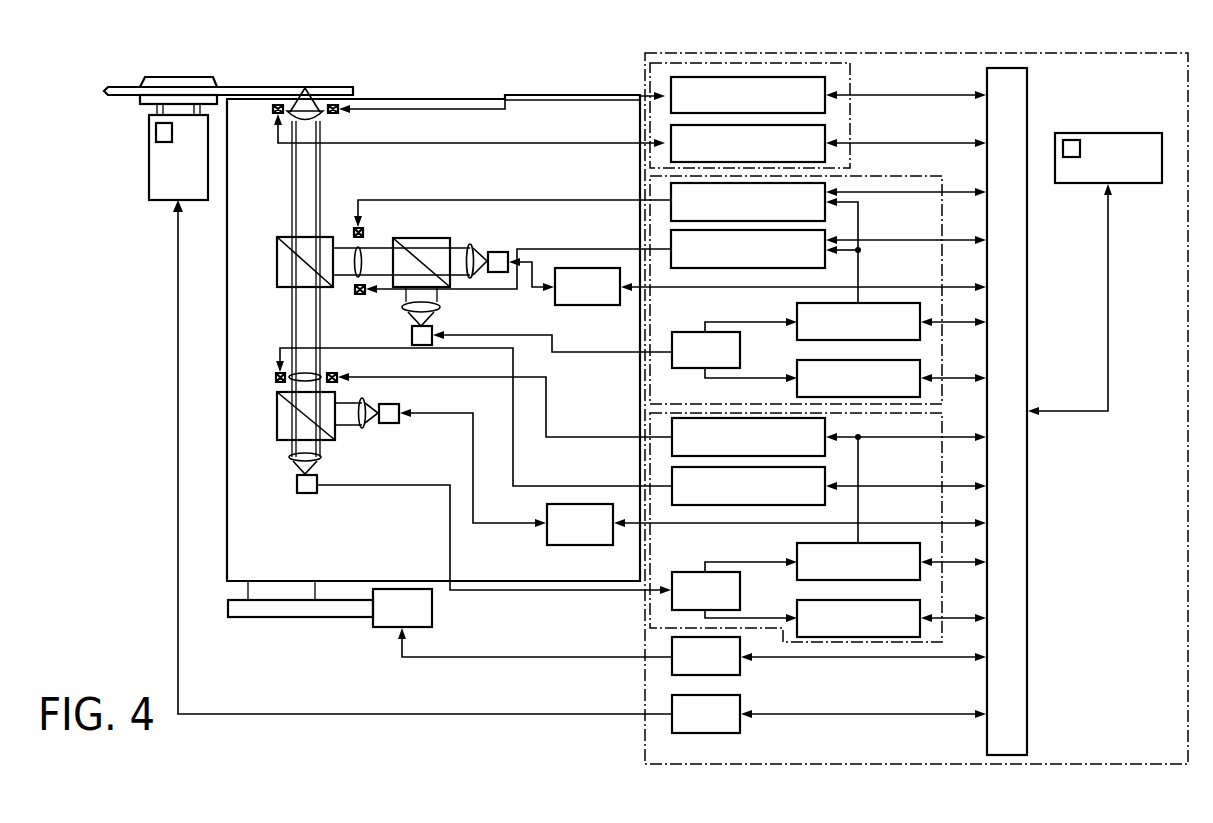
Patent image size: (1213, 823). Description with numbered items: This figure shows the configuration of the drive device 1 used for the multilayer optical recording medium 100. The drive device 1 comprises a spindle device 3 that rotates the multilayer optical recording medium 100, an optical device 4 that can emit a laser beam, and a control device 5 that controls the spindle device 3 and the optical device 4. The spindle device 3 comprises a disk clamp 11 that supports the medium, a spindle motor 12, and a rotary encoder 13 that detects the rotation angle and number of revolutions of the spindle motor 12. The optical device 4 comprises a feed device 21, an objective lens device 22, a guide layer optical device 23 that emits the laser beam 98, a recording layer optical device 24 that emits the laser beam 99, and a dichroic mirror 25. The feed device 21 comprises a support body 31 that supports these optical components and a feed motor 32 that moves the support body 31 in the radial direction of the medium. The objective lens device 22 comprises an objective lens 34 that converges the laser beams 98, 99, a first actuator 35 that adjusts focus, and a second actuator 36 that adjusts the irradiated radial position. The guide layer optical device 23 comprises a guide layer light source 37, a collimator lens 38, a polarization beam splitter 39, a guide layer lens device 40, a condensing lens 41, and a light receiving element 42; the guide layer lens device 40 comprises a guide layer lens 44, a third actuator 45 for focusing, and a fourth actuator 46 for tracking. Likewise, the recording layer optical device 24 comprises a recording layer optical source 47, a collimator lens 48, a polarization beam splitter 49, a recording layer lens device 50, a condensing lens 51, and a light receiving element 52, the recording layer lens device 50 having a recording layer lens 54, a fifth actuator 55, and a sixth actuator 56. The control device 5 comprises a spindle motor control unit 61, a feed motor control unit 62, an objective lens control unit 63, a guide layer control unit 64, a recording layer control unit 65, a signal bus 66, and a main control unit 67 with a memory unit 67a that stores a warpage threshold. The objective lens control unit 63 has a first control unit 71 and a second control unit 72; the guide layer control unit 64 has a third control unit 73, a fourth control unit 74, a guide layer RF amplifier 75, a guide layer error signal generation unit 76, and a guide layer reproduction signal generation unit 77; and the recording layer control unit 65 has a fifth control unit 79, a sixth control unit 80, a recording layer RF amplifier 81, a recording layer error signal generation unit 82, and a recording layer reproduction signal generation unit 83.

The drive device 1 is at (542, 724).
The spindle device 3 is at (221, 140).
The optical device 4 is at (586, 313).
The control device 5 is at (785, 50).
The disk clamp 11 is at (192, 76).
The spindle motor 12 is at (152, 201).
The rotary encoder 13 is at (156, 132).
The feed device 21 is at (321, 628).
The objective lens device 22 is at (314, 100).
The guide layer optical device 23 is at (429, 493).
The recording layer optical device 24 is at (499, 253).
The dichroic mirror 25 is at (276, 261).
The support body 31 is at (473, 96).
The feed motor 32 is at (283, 618).
The objective lens 34 is at (324, 120).
The first actuator 35 is at (338, 104).
The second actuator 36 is at (278, 104).
The guide layer light source 37 is at (580, 546).
The collimator lens 38 is at (392, 424).
The polarization beam splitter 39 is at (276, 417).
The guide layer lens device 40 is at (429, 401).
The condensing lens 41 is at (322, 457).
The light receiving element 42 is at (305, 494).
The guide layer lens 44 is at (301, 372).
The third actuator 45 is at (332, 372).
The fourth actuator 46 is at (275, 372).
The recording layer optical source 47 is at (587, 306).
The collimator lens 48 is at (474, 244).
The polarization beam splitter 49 is at (427, 237).
The recording layer lens device 50 is at (364, 240).
The condensing lens 51 is at (441, 307).
The light receiving element 52 is at (433, 331).
The recording layer lens 54 is at (368, 243).
The fifth actuator 55 is at (354, 228).
The sixth actuator 56 is at (360, 295).
The spindle motor control unit 61 is at (742, 727).
The feed motor control unit 62 is at (742, 670).
The objective lens control unit 63 is at (818, 91).
The guide layer control unit 64 is at (795, 558).
The recording layer control unit 65 is at (795, 254).
The signal bus 66 is at (1010, 67).
The main control unit 67 is at (1095, 254).
The memory unit 67a is at (1070, 140).
The first control unit 71 is at (688, 76).
The second control unit 72 is at (730, 133).
The third control unit 73 is at (672, 428).
The fourth control unit 74 is at (672, 475).
The guide layer radio frequency amplifier 75 is at (672, 603).
The guide layer error signal generation unit 76 is at (840, 581).
The guide layer reproduction signal generation unit 77 is at (885, 638).
The fifth control unit 79 is at (672, 191).
The sixth control unit 80 is at (672, 240).
The recording layer radio-frequency amplifier 81 is at (690, 332).
The recording layer error signal generation unit 82 is at (880, 302).
The recording layer reproduction signal generation unit 83 is at (897, 359).
The laser beam 98 is at (292, 305).
The laser beam 99 is at (323, 163).
The multilayer optical recording medium 100 is at (242, 86).